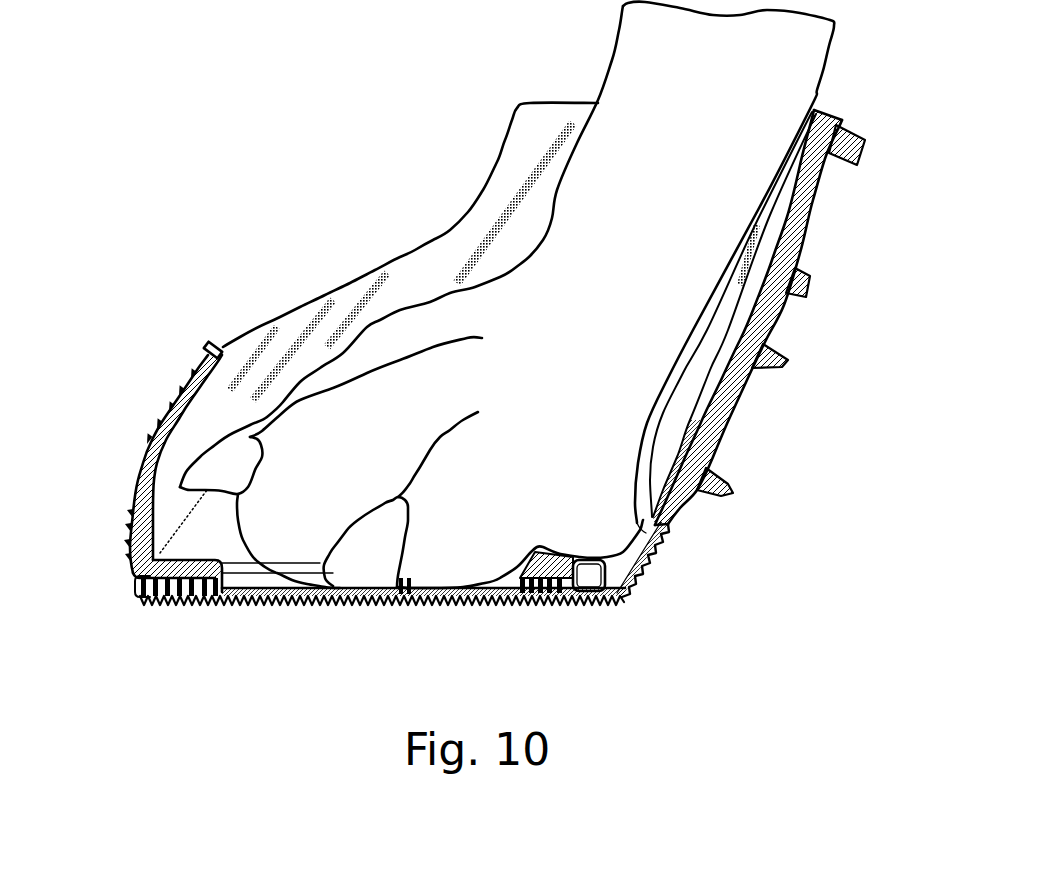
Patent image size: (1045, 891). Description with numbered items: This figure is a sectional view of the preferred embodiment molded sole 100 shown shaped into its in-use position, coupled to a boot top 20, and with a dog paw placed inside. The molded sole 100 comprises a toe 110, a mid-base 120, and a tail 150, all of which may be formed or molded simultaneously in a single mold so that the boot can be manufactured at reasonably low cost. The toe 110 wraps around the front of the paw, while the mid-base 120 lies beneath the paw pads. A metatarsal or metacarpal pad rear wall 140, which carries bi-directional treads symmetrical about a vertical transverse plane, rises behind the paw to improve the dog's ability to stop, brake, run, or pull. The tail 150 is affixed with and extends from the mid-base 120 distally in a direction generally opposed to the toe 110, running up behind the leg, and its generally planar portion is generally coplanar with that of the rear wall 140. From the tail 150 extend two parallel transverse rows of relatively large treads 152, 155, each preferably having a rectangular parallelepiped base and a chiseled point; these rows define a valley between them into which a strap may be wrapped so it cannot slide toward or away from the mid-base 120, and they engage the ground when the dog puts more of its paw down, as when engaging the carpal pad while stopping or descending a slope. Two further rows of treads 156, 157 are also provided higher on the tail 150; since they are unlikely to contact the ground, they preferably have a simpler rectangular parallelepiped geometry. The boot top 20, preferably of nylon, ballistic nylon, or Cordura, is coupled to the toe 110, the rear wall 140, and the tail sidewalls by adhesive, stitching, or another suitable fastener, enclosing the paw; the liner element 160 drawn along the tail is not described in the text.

The boot top 20 is at (431, 260).
The molded sole 100 is at (705, 552).
The toe 110 is at (128, 460).
The mid-base 120 is at (350, 610).
The metatarsal or metacarpal pad rear wall 140 is at (632, 610).
The tail 150 is at (772, 316).
The treads 152 is at (731, 491).
The treads 155 is at (788, 362).
The treads 156 is at (800, 276).
The treads 157 is at (862, 140).
The liner 160 is at (683, 396).